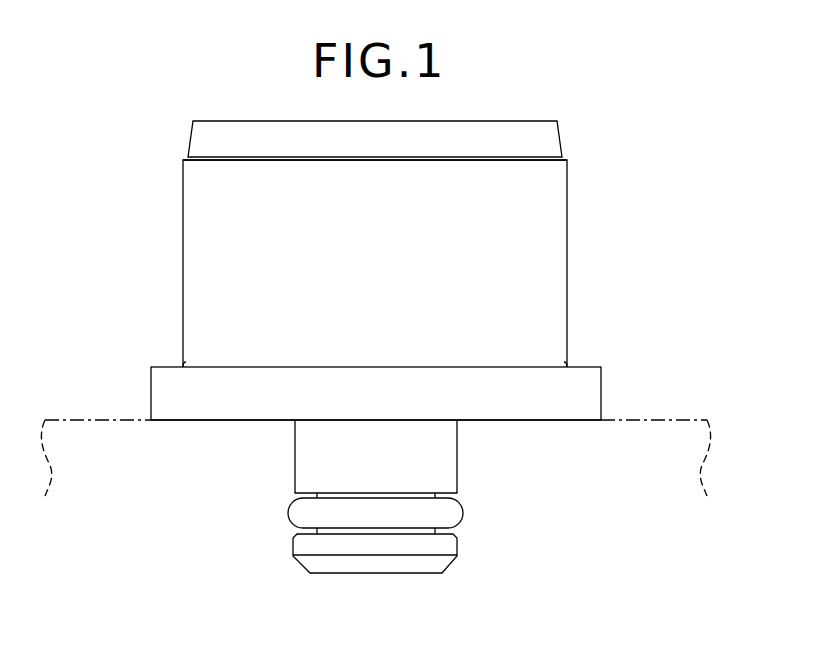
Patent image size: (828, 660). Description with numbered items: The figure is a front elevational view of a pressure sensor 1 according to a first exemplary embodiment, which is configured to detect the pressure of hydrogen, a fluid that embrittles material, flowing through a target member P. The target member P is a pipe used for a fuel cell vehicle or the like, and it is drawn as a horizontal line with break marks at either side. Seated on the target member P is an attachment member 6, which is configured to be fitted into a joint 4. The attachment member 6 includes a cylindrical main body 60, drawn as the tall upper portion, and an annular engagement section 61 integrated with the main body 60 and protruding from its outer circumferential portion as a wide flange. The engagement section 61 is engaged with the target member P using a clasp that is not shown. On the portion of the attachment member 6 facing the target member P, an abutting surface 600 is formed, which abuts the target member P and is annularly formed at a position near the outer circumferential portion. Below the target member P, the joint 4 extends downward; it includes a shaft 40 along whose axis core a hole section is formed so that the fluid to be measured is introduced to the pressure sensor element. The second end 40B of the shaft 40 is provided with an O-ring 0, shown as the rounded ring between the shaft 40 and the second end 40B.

The pressure sensor 1 is at (621, 127).
The attachment member 6 is at (169, 201).
The main body 60 is at (197, 265).
The engagement section 61 is at (155, 387).
The abutting surface 600 is at (580, 422).
The target member P is at (660, 419).
The shaft 40 is at (456, 477).
The O-ring 0 is at (288, 512).
The joint 4 is at (425, 579).
The second end of the shaft 40B is at (397, 551).